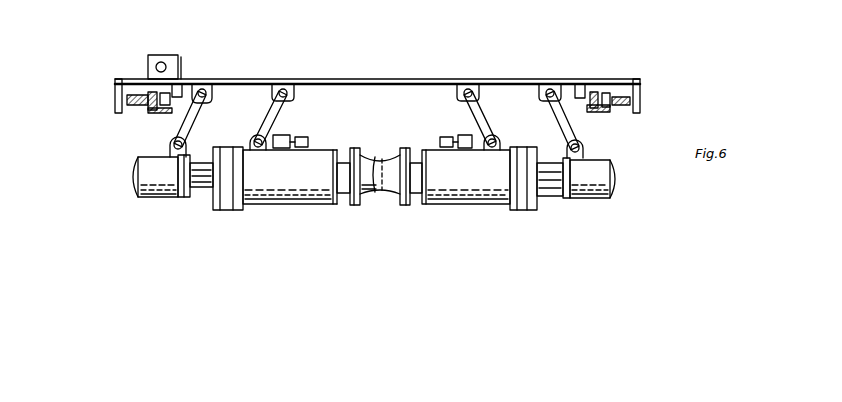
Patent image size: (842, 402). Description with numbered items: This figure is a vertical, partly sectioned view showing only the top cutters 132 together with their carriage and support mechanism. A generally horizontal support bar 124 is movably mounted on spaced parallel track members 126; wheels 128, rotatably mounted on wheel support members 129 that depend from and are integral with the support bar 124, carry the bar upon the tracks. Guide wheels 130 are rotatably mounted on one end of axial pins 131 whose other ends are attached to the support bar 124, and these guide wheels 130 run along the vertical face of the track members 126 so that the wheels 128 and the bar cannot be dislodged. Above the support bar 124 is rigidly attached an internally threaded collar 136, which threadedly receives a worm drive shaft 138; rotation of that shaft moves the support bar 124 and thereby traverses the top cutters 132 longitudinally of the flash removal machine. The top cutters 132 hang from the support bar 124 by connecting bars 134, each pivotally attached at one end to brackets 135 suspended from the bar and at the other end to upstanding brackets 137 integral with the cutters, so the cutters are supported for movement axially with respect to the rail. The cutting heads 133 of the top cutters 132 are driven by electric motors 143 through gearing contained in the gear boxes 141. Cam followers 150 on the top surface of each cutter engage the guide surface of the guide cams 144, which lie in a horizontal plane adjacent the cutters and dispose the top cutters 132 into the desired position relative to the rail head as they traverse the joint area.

The horizontal support bar 124 is at (362, 78).
The parallel track members 126 is at (148, 112).
The wheels 128 is at (157, 112).
The wheel support members 129 is at (183, 86).
The guide wheels 130 is at (135, 107).
The axial pins 131 is at (122, 91).
The top cutters 132 is at (236, 211).
The cutting heads 133 is at (370, 203).
The connecting bars 134 is at (195, 116).
The brackets 135 is at (276, 83).
The internally threaded collar 136 is at (147, 53).
The upstanding brackets 137 is at (165, 155).
The worm drive shaft 138 is at (165, 64).
The gear boxes 141 is at (297, 206).
The electric motors 143 is at (155, 190).
The guide cams 144 is at (310, 142).
The cam followers 150 is at (285, 135).